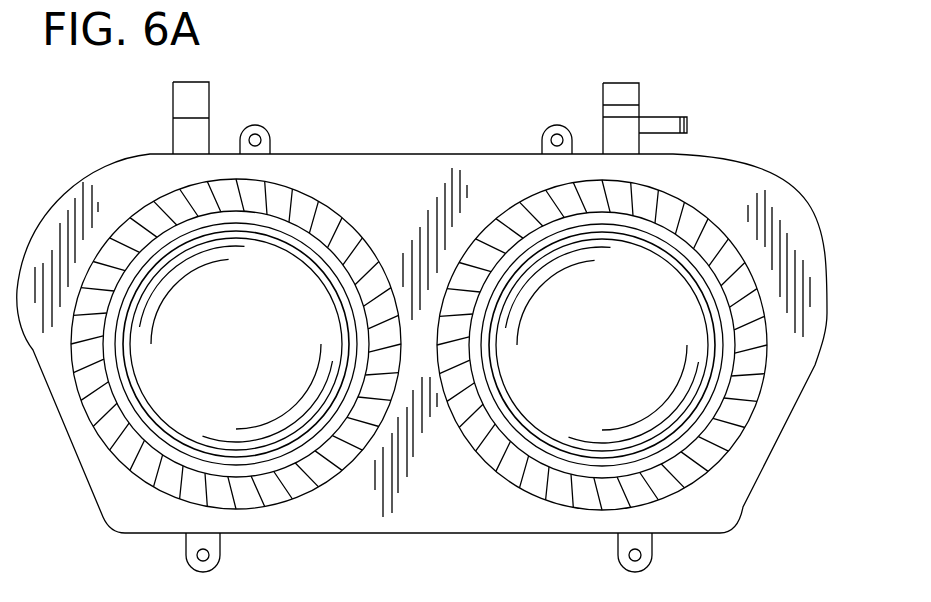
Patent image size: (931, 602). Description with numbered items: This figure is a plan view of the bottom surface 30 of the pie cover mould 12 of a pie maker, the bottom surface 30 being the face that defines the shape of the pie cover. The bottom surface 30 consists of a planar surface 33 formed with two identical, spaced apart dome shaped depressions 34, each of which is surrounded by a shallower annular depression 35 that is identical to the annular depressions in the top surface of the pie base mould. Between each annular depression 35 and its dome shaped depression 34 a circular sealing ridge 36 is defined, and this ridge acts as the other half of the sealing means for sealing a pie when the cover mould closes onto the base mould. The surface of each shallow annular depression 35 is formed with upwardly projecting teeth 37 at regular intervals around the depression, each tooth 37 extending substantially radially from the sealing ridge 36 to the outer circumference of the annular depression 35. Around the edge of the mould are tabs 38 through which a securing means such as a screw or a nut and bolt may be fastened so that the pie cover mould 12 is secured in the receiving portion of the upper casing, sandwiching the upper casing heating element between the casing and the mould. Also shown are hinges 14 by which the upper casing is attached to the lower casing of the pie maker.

The pie cover mould 12 is at (826, 303).
The hinge 14 is at (192, 95).
The bottom surface 30 is at (737, 473).
The planar surface 33 is at (792, 224).
The dome shaped depression 34 is at (698, 378).
The annular depression 35 is at (758, 340).
The sealing ridge 36 is at (716, 270).
The tooth 37 is at (690, 220).
The tab 38 is at (257, 127).